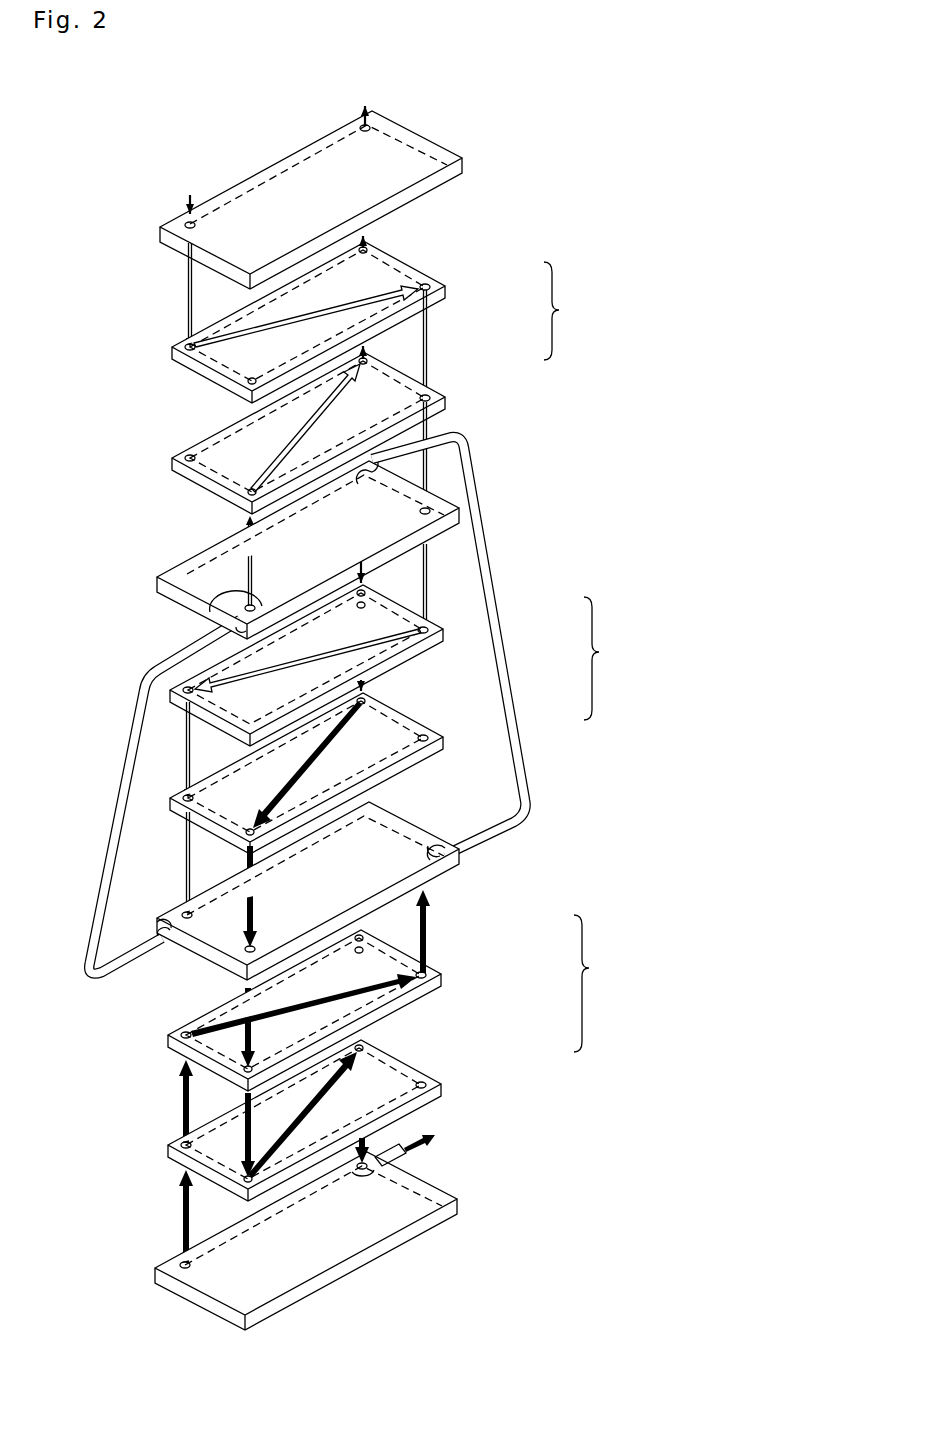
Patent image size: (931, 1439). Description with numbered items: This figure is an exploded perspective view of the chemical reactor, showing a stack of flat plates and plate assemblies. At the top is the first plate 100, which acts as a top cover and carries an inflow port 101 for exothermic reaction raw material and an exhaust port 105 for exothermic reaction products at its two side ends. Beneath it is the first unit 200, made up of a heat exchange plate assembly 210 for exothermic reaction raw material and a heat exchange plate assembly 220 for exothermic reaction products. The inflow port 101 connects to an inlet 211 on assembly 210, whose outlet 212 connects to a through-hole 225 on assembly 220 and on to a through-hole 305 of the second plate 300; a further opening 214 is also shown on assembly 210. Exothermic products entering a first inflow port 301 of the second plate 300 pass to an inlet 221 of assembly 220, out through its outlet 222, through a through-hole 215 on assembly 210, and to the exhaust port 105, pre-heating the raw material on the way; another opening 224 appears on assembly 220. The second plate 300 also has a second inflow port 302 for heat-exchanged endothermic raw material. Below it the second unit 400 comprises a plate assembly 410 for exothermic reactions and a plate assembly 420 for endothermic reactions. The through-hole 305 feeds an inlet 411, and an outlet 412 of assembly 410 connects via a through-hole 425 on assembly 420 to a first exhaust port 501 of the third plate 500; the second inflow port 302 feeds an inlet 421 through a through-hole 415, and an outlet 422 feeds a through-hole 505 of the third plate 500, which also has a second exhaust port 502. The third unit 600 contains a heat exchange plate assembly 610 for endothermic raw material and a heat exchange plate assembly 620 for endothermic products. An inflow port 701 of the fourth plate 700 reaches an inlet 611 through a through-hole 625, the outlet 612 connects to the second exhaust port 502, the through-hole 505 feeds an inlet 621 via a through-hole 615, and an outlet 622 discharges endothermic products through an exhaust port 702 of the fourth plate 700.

The first plate 100 is at (452, 141).
The inflow port 101 is at (183, 226).
The exhaust port 105 is at (372, 122).
The first unit 200 is at (579, 311).
The heat exchange plate assembly for exothermic reaction raw material 210 is at (170, 322).
The inlet 211 is at (183, 351).
The outlet 212 is at (433, 281).
The hole 214 is at (243, 390).
The through-hole 215 is at (373, 244).
The heat exchange plate assembly for exothermic reaction products 220 is at (170, 436).
The inlet 221 is at (243, 497).
The outlet 222 is at (380, 343).
The hole 224 is at (183, 461).
The through-hole 225 is at (433, 385).
The second plate 300 is at (162, 561).
The first inflow port 301 is at (242, 605).
The second inflow port 302 is at (395, 440).
The through-hole 305 is at (433, 506).
The second unit 400 is at (617, 658).
The plate assembly for exothermic reactions 410 is at (462, 634).
The inlet 411 is at (440, 625).
The outlet 412 is at (180, 689).
The through-hole 415 is at (371, 584).
The plate assembly for endothermic reactions 420 is at (460, 724).
The inlet 421 is at (378, 688).
The outlet 422 is at (242, 841).
The through-hole 425 is at (178, 803).
The third plate 500 is at (476, 857).
The first exhaust port 501 is at (168, 947).
The second exhaust port 502 is at (438, 845).
The through-hole 505 is at (243, 958).
The third unit 600 is at (608, 983).
The heat exchange plate assembly for endothermic reaction raw material 610 is at (452, 935).
The inlet 611 is at (180, 1038).
The outlet 612 is at (437, 966).
The through-hole 615 is at (185, 1086).
The heat exchange plate assembly for endothermic reaction products 620 is at (450, 1066).
The inlet 621 is at (190, 1188).
The outlet 622 is at (375, 1040).
The through-hole 625 is at (180, 1147).
The fourth plate 700 is at (448, 1176).
The inflow port 701 is at (180, 1263).
The exhaust port 702 is at (385, 1152).